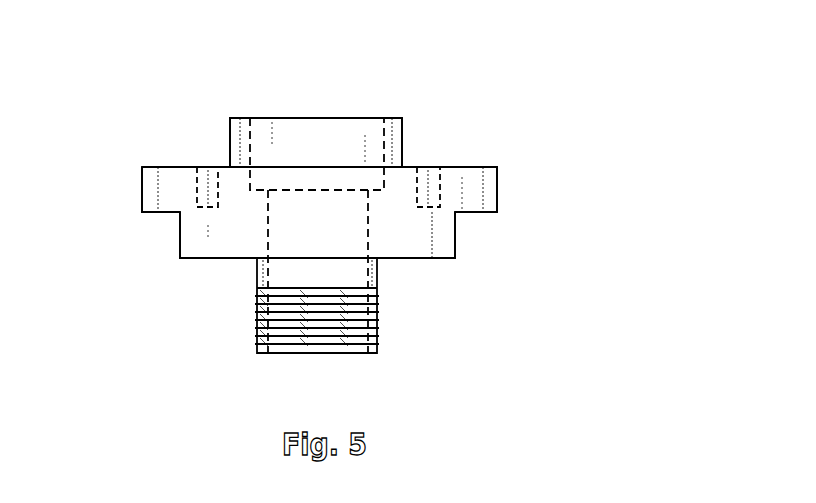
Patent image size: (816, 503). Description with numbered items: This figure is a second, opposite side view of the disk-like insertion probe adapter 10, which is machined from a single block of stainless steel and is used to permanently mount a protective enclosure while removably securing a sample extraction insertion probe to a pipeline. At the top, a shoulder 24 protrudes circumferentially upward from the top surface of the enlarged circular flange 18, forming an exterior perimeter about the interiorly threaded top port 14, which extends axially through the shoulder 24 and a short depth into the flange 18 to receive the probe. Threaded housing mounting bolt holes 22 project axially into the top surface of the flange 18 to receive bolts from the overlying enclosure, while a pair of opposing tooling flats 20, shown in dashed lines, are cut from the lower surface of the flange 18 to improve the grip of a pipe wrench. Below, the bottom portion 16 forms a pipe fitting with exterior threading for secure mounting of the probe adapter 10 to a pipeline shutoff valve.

The insertion probe adapter 10 is at (444, 96).
The interiorly threaded top port 14 is at (383, 143).
The bottom portion 16 is at (378, 273).
The circular flange 18 is at (472, 196).
The tooling flats 20 is at (178, 236).
The housing mounting bolt holes 22 is at (197, 183).
The shoulder 24 is at (233, 135).